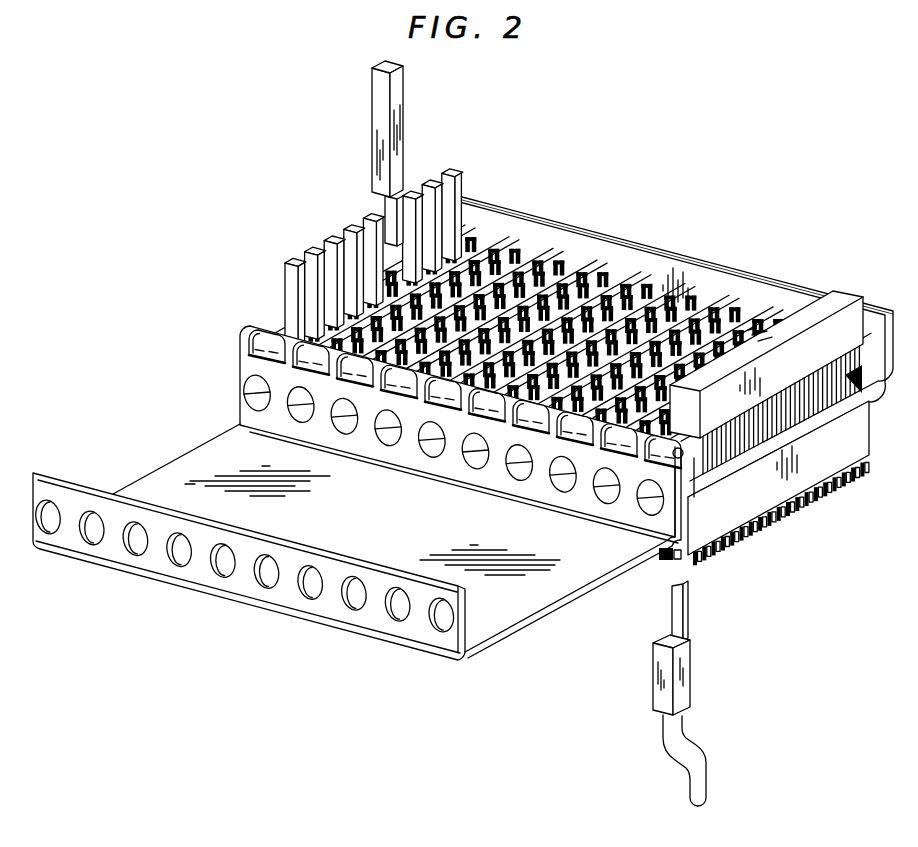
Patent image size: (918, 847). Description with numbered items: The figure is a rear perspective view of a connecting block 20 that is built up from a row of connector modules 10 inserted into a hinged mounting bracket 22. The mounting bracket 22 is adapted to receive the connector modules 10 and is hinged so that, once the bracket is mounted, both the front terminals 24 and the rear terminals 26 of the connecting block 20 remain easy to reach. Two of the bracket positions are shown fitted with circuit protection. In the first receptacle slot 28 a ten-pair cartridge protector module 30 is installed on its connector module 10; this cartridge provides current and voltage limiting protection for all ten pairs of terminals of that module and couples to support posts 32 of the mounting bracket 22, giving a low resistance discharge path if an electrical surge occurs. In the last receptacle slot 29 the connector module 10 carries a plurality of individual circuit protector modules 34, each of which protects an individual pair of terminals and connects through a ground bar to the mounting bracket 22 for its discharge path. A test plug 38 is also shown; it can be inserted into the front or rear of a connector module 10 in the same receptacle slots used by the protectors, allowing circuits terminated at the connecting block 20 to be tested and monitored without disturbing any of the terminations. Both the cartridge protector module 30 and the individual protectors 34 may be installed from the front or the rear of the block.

The connector module 10 is at (868, 433).
The connecting block 20 is at (630, 157).
The hinged mounting bracket 22 is at (523, 629).
The front terminals 24 is at (708, 577).
The rear terminals 26 is at (562, 275).
The first receptacle slot 28 is at (868, 378).
The last receptacle slot 29 is at (457, 270).
The cartridge protector module 30 is at (832, 294).
The support posts 32 is at (672, 563).
The individual circuit protector modules 34 is at (372, 138).
The test plug 38 is at (698, 706).